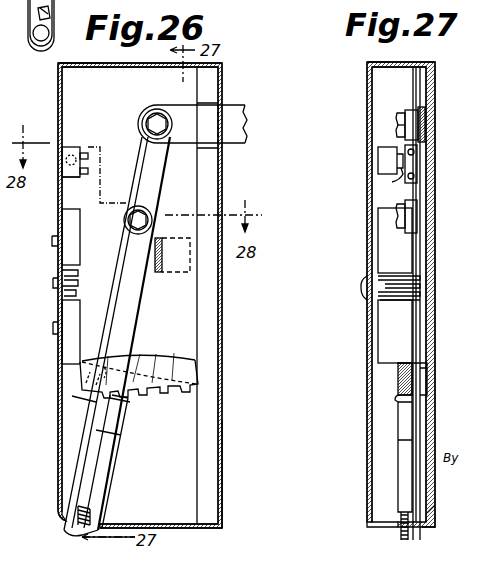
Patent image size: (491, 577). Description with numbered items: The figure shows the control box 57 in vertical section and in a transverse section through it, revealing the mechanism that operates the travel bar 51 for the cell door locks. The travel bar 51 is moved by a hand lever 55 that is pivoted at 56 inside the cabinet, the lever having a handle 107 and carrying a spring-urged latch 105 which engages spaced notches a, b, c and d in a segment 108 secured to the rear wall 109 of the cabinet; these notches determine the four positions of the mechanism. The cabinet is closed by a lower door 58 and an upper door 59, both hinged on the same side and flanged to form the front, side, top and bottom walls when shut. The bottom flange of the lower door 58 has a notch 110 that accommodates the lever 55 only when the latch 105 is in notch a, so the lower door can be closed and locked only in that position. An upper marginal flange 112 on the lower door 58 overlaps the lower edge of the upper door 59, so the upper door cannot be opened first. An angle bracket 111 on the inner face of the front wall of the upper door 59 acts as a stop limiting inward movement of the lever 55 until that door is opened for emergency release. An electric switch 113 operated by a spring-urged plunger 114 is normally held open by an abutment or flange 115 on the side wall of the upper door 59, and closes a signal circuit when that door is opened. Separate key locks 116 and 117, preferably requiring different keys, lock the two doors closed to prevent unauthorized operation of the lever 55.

In FIG. 26, the travel bar 51 is at (247, 112).
In FIG. 27, the travel bar 51 is at (425, 118).
In FIG. 26, the hand lever 55 is at (128, 323).
In FIG. 27, the hand lever 55 is at (420, 535).
In FIG. 26, the pivot 56 is at (132, 222).
In FIG. 27, the pivot 56 is at (398, 216).
In FIG. 26, the control box 57 is at (222, 455).
In FIG. 26, the lower door 58 is at (58, 403).
In FIG. 27, the lower door 58 is at (368, 387).
In FIG. 26, the upper door 59 is at (58, 82).
In FIG. 27, the upper door 59 is at (368, 130).
In FIG. 26, the spring-urged latch 105 is at (96, 452).
In FIG. 27, the spring-urged latch 105 is at (405, 460).
In FIG. 26, the handle 107 is at (46, 33).
In FIG. 26, the segment 108 is at (148, 392).
In FIG. 27, the segment 108 is at (405, 381).
In FIG. 26, the rear wall 109 is at (192, 190).
In FIG. 27, the rear wall 109 is at (432, 416).
In FIG. 26, the notch 110 is at (100, 520).
In FIG. 27, the notch 110 is at (426, 510).
In FIG. 26, the angle bracket 111 is at (162, 263).
In FIG. 26, the upper marginal flange 112 is at (62, 300).
In FIG. 27, the upper marginal flange 112 is at (363, 294).
In FIG. 26, the electric switch 113 is at (74, 180).
In FIG. 27, the electric switch 113 is at (417, 160).
In FIG. 27, the spring-urged plunger 114 is at (392, 182).
In FIG. 26, the abutment or flange 115 is at (72, 146).
In FIG. 27, the abutment or flange 115 is at (392, 170).
In FIG. 26, the key lock 116 is at (70, 345).
In FIG. 27, the key lock 116 is at (392, 334).
In FIG. 26, the key lock 117 is at (70, 226).
In FIG. 27, the key lock 117 is at (390, 266).